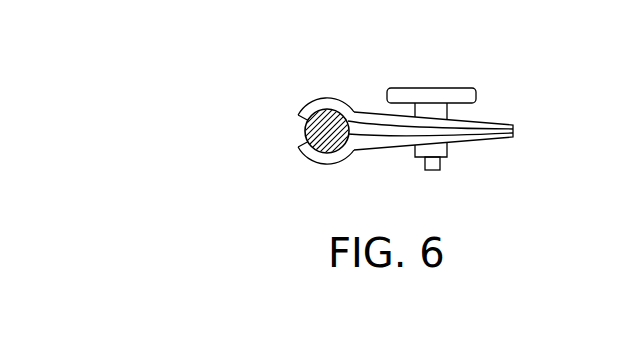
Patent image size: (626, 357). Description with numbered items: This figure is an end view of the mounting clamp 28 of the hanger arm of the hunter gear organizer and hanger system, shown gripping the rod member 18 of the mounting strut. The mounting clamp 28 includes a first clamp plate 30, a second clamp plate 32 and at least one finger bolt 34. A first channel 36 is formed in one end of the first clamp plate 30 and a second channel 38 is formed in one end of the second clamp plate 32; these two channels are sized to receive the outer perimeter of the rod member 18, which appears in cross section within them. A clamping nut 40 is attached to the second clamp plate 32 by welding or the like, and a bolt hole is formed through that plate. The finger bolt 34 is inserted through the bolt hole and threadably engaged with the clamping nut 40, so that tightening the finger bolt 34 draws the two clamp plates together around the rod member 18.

The rod member 18 is at (310, 142).
The mounting clamp 28 is at (532, 130).
The first clamp plate 30 is at (488, 116).
The second clamp plate 32 is at (475, 143).
The finger bolt 34 is at (432, 87).
The first channel 36 is at (327, 109).
The second channel 38 is at (326, 164).
The clamping nut 40 is at (413, 160).